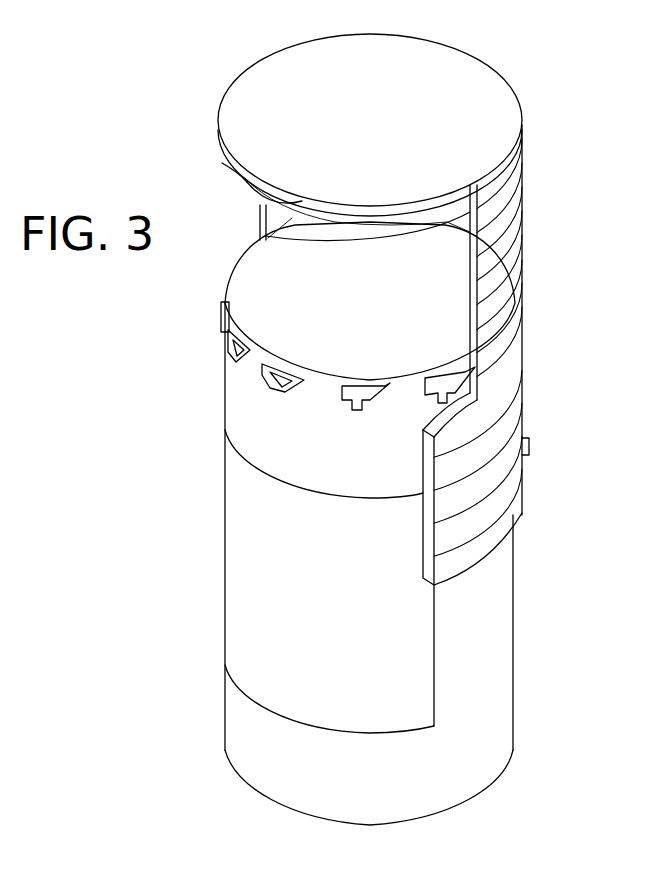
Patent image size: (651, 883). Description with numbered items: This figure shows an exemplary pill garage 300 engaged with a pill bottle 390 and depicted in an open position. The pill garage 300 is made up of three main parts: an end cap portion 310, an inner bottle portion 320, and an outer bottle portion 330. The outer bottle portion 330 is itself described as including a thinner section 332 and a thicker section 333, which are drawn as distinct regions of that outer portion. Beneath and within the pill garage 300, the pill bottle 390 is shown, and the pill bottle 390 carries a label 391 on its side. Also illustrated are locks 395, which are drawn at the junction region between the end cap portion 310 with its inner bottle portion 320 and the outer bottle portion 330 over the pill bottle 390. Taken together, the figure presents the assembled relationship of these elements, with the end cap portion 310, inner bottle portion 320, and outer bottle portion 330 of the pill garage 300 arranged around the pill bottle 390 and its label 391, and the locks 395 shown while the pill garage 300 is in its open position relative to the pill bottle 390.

The pill garage 300 is at (517, 75).
The end cap portion 310 is at (226, 154).
The inner bottle portion 320 is at (257, 198).
The outer bottle portion 330 is at (521, 500).
The thinner section 332 is at (470, 332).
The thicker section 333 is at (421, 451).
The pill bottle 390 is at (235, 800).
The label 391 is at (245, 610).
The locks 395 is at (343, 397).